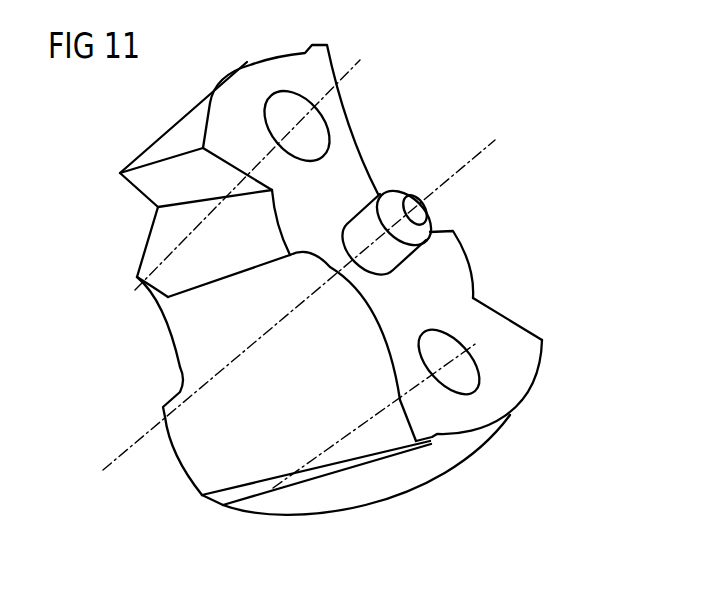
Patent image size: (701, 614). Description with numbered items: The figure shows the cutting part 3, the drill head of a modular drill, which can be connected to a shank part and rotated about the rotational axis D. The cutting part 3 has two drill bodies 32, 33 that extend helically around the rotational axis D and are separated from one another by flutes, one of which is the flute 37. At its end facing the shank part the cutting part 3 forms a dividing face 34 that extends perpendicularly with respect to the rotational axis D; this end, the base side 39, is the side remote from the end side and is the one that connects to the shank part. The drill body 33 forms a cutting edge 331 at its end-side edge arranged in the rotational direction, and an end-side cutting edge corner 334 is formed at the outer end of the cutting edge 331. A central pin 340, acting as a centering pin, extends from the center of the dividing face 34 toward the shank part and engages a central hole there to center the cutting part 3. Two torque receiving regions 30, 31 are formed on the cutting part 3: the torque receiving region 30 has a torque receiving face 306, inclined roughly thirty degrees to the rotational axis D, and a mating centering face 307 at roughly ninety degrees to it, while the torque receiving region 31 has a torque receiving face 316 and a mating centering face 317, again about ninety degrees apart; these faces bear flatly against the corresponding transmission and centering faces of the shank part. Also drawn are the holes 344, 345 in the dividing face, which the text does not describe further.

The cutting part 3 is at (332, 301).
The torque receiving region 30 is at (161, 222).
The torque receiving face 306 is at (172, 177).
The mating centering face 307 is at (165, 243).
The torque receiving region 31 is at (526, 299).
The torque receiving face 316 is at (543, 287).
The mating centering face 317 is at (467, 258).
The drill body 32 is at (238, 97).
The drill body 33 is at (272, 432).
The cutting edge 331 is at (177, 457).
The end-side cutting edge corner 334 is at (200, 497).
The dividing face 34 is at (524, 390).
The base side 39 is at (507, 373).
The central pin 340 is at (390, 198).
The fastening hole 344 is at (455, 375).
The fastening hole 345 is at (307, 138).
The flute 37 is at (222, 312).
The rotational axis D is at (130, 448).